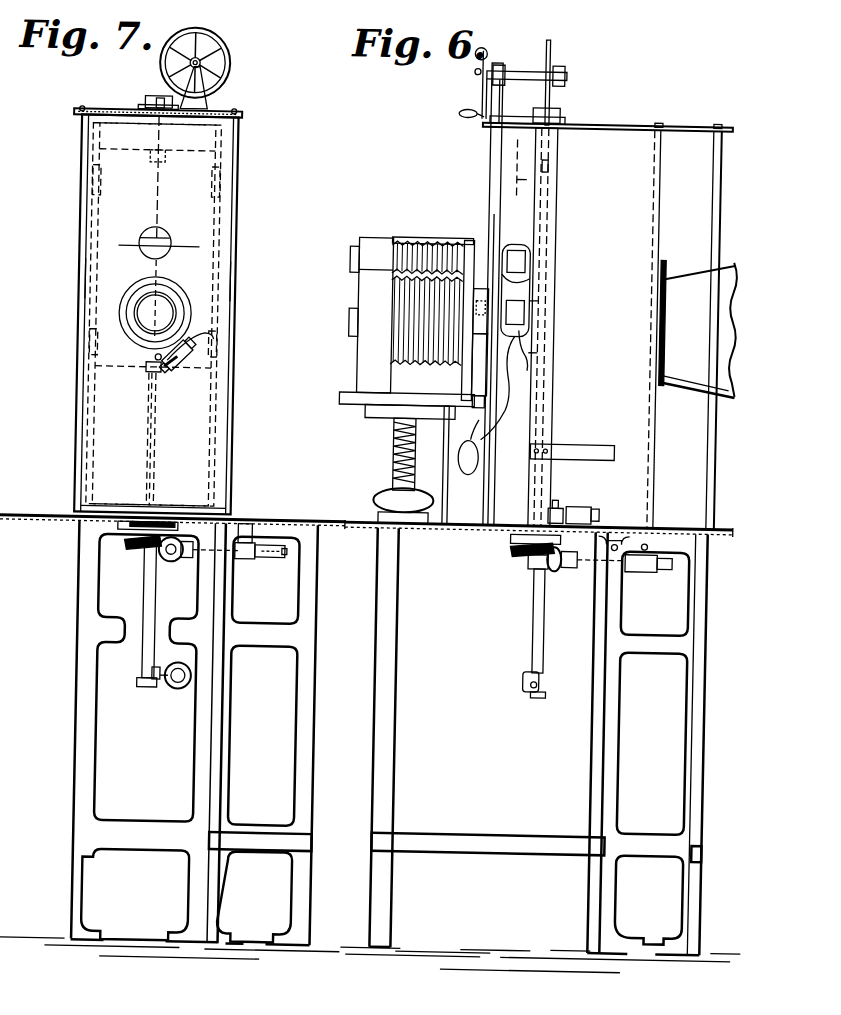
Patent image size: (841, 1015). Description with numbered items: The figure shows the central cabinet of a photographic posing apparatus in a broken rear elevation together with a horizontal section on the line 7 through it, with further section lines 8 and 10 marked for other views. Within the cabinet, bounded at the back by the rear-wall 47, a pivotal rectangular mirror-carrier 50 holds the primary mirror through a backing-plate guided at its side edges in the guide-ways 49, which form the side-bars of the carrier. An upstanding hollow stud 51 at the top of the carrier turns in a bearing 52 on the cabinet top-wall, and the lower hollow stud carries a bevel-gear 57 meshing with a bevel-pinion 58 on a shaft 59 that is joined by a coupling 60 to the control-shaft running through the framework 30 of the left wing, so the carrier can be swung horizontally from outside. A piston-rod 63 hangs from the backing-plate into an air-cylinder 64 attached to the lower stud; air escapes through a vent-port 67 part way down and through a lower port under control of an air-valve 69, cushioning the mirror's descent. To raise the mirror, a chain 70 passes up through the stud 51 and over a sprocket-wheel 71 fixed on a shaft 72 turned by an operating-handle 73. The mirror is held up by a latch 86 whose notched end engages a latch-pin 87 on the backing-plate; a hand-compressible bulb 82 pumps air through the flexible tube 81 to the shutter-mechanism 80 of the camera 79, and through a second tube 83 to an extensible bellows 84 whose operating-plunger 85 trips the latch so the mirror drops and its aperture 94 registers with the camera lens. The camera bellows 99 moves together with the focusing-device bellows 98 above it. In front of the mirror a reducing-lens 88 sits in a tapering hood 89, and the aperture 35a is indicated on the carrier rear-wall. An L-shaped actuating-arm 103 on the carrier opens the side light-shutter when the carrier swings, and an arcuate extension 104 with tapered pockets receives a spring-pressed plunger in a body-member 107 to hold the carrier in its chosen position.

In FIG. 6, the section line 7- 7 is at (514, 88).
In FIG. 7, the section line 8- 8 is at (155, 110).
In FIG. 7, the section line 10- 10 is at (74, 246).
In FIG. 7, the framework 30 is at (291, 627).
In FIG. 6, the framework 30 is at (599, 740).
In FIG. 7, the shutter mechanism 35a is at (153, 220).
In FIG. 6, the rear-wall 47 is at (487, 200).
In FIG. 7, the guide-ways 49 is at (84, 282).
In FIG. 7, the mirror-carrier 50 is at (97, 453).
In FIG. 6, the mirror-carrier 50 is at (554, 205).
In FIG. 6, the hollow stud 51 is at (552, 129).
In FIG. 7, the bearing 52 is at (141, 100).
In FIG. 6, the bearing 52 is at (556, 113).
In FIG. 7, the bevel-gear 57 is at (134, 548).
In FIG. 6, the bevel-gear 57 is at (510, 552).
In FIG. 7, the bevel-pinion 58 is at (173, 560).
In FIG. 6, the bevel-pinion 58 is at (551, 570).
In FIG. 7, the shaft 59 is at (243, 560).
In FIG. 6, the shaft 59 is at (590, 568).
In FIG. 7, the coupling 60 is at (279, 556).
In FIG. 6, the coupling 60 is at (660, 572).
In FIG. 7, the piston-rod 63 is at (158, 470).
In FIG. 7, the air-cylinder 64 is at (151, 660).
In FIG. 7, the vent-port 67 is at (154, 580).
In FIG. 7, the air-valve 69 is at (177, 690).
In FIG. 6, the air-valve 69 is at (543, 698).
In FIG. 7, the chain 70 is at (153, 85).
In FIG. 7, the sprocket-wheel 71 is at (224, 71).
In FIG. 6, the sprocket-wheel 71 is at (545, 55).
In FIG. 7, the shaft 72 is at (207, 44).
In FIG. 6, the operating-handle 73 is at (475, 83).
In FIG. 6, the camera 79 is at (407, 380).
In FIG. 6, the shutter-mechanism 80 is at (470, 347).
In FIG. 6, the flexible tube 81 is at (476, 382).
In FIG. 6, the hand-compressible bulb 82 is at (471, 463).
In FIG. 7, the second tube 83 is at (214, 338).
In FIG. 6, the second tube 83 is at (508, 396).
In FIG. 7, the extensible bellows 84 is at (190, 360).
In FIG. 7, the operating-plunger 85 is at (178, 362).
In FIG. 7, the latch 86 is at (150, 358).
In FIG. 7, the latch-pin 87 is at (158, 335).
In FIG. 6, the reducing-lens 88 is at (658, 318).
In FIG. 6, the hood 89 is at (692, 370).
In FIG. 7, the aperture 94 is at (163, 242).
In FIG. 6, the flexible bellows 98 is at (413, 254).
In FIG. 6, the flexible bellows 99 is at (408, 300).
In FIG. 6, the L-shaped actuating-arm 103 is at (599, 439).
In FIG. 6, the arcuate extension 104 is at (564, 508).
In FIG. 6, the body-member 107 is at (586, 506).